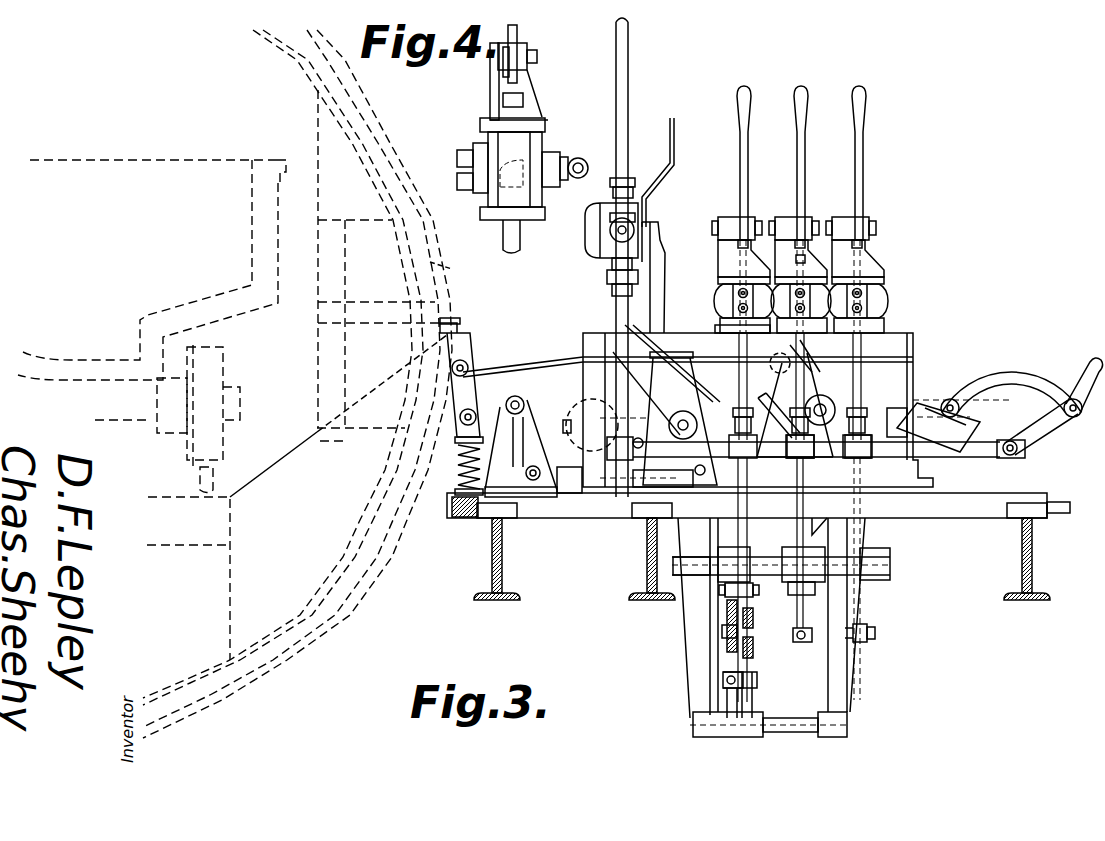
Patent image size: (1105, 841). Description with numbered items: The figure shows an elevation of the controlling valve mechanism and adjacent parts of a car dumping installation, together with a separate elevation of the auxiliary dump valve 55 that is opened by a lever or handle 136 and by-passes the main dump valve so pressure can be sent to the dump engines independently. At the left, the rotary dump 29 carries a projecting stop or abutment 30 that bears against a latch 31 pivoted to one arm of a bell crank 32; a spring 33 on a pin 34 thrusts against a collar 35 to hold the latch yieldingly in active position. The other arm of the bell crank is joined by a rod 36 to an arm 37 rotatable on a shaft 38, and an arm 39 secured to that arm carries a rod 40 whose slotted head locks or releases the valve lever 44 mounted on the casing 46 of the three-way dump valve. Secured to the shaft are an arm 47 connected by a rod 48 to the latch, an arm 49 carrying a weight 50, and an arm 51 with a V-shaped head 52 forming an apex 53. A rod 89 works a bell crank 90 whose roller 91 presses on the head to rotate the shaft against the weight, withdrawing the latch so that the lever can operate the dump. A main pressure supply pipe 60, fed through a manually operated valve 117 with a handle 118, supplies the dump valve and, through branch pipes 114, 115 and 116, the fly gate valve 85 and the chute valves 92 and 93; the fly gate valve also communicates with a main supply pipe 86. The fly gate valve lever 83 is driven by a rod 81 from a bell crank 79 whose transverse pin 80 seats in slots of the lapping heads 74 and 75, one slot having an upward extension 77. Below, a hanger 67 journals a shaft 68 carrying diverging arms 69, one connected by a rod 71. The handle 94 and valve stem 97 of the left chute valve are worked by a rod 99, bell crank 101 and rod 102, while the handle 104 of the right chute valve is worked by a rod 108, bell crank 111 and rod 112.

In FIG. 3, the rotary dump 29 is at (452, 269).
In FIG. 3, the stop or abutment 30 is at (458, 323).
In FIG. 3, the latch 31 is at (470, 350).
In FIG. 3, the bell crank 32 is at (505, 402).
In FIG. 3, the spring 33 is at (455, 495).
In FIG. 3, the pin 34 is at (457, 460).
In FIG. 3, the collar 35 is at (457, 443).
In FIG. 3, the rod 36 is at (632, 492).
In FIG. 3, the arm 37 is at (742, 458).
In FIG. 3, the shaft 38 is at (695, 422).
In FIG. 3, the arm 39 is at (688, 368).
In FIG. 3, the rod 40 is at (660, 238).
In FIG. 3, the valve lever 44 is at (672, 160).
In FIG. 3, the casing 46 is at (600, 236).
In FIG. 3, the arm 47 is at (683, 360).
In FIG. 3, the rod 48 is at (532, 368).
In FIG. 3, the arm 49 is at (613, 365).
In FIG. 3, the weight 50 is at (572, 412).
In FIG. 3, the arm 51 is at (765, 422).
In FIG. 3, the V-shaped head 52 is at (800, 458).
In FIG. 3, the apex 53 is at (830, 420).
In FIG. 4, the auxiliary valve 55 is at (522, 160).
In FIG. 3, the main pressure supply pipe 60 is at (616, 298).
In FIG. 3, the hanger 67 is at (692, 700).
In FIG. 3, the shaft 68 is at (800, 732).
In FIG. 3, the diverging arms 69 is at (760, 700).
In FIG. 3, the rod 71 is at (723, 680).
In FIG. 3, the flat head 74 is at (727, 615).
In FIG. 3, the head 75 is at (756, 658).
In FIG. 3, the upward extension 77 is at (755, 640).
In FIG. 3, the bell crank 79 is at (745, 604).
In FIG. 3, the transverse pin 80 is at (722, 632).
In FIG. 3, the rod 81 is at (748, 480).
In FIG. 3, the valve lever 83 is at (745, 185).
In FIG. 3, the valve 85 is at (722, 300).
In FIG. 3, the main supply pipe 86 is at (900, 450).
In FIG. 3, the rod 89 is at (800, 360).
In FIG. 3, the bell crank 90 is at (790, 350).
In FIG. 3, the roller 91 is at (860, 403).
In FIG. 3, the valve 92 is at (790, 292).
In FIG. 3, the valve 93 is at (858, 300).
In FIG. 3, the operating handle 94 is at (805, 182).
In FIG. 3, the valve stem 97 is at (803, 260).
In FIG. 3, the rod 99 is at (792, 530).
In FIG. 3, the bell crank 101 is at (808, 480).
In FIG. 3, the rod 102 is at (812, 637).
In FIG. 3, the operating lever or handle 104 is at (862, 168).
In FIG. 3, the rod 108 is at (870, 470).
In FIG. 3, the bell crank 111 is at (870, 625).
In FIG. 3, the rod 112 is at (878, 633).
In FIG. 3, the branch pipe 114 is at (728, 330).
In FIG. 3, the branch pipe 115 is at (818, 395).
In FIG. 3, the branch pipe 116 is at (885, 402).
In FIG. 3, the manually operated valve 117 is at (1012, 458).
In FIG. 3, the handle 118 is at (1082, 372).
In FIG. 4, the lever or handle 136 is at (517, 33).